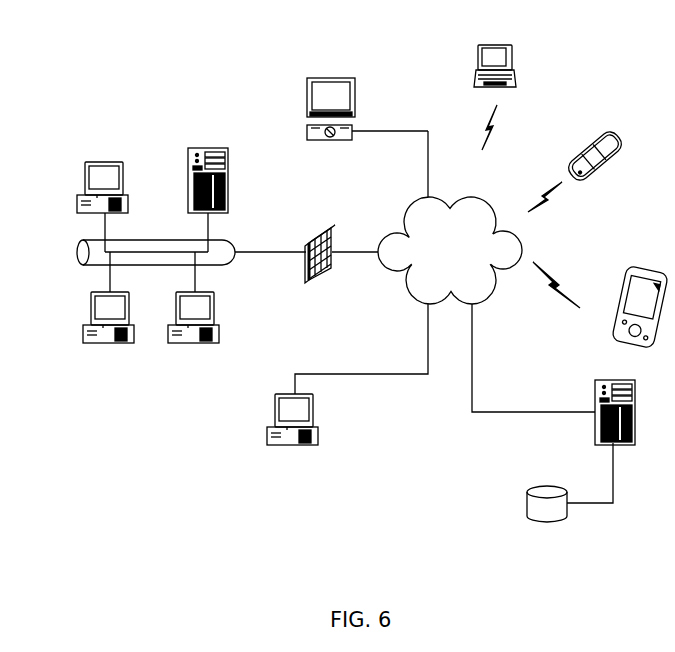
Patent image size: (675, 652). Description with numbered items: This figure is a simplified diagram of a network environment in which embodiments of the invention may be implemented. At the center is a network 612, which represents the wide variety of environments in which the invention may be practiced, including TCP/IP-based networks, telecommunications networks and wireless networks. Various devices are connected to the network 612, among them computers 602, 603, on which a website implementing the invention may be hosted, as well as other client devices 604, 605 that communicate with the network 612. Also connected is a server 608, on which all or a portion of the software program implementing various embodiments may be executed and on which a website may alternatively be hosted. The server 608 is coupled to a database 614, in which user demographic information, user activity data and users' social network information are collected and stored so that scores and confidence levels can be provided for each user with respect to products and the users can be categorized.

The computer 602 is at (85, 180).
The computer 603 is at (307, 130).
The mobile phone 604 is at (600, 130).
The personal digital assistant 605 is at (620, 291).
The server 608 is at (586, 400).
The network 612 is at (407, 208).
The database 614 is at (524, 491).